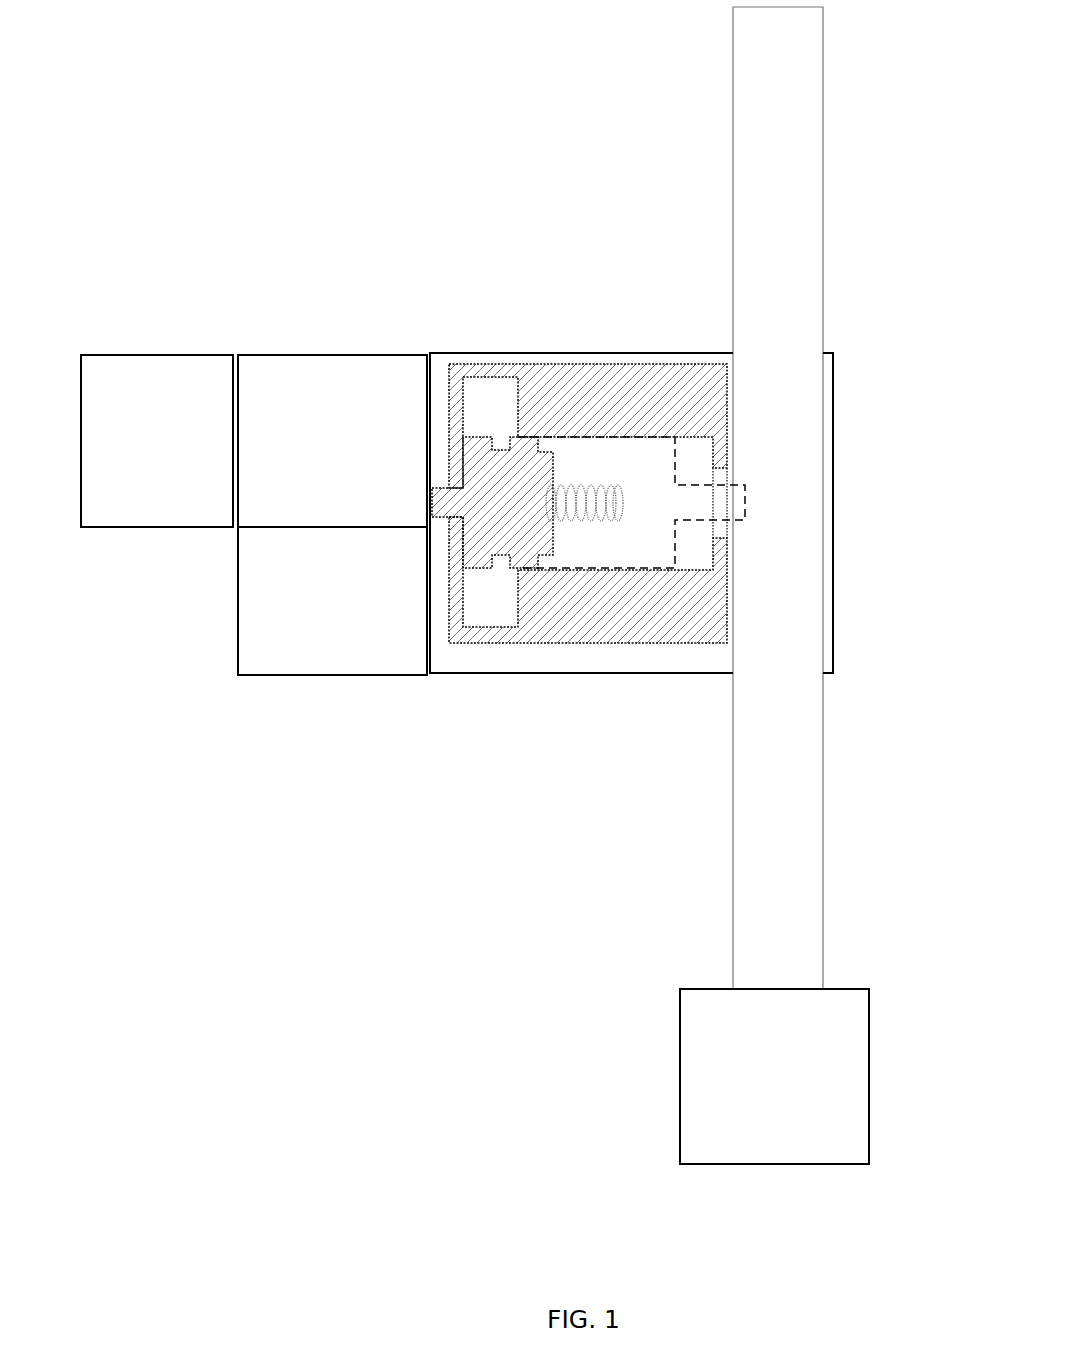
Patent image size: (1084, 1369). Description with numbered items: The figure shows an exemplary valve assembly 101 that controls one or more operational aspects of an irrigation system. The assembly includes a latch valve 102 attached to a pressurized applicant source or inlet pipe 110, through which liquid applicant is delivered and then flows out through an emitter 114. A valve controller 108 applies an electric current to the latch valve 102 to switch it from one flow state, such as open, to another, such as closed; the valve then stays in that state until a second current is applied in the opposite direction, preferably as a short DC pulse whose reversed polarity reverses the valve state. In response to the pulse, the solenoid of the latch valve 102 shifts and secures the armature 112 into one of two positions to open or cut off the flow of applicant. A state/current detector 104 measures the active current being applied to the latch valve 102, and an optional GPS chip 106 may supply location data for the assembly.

The valve assembly 101 is at (442, 129).
The latch valve 102 is at (470, 373).
The state/current detector 104 is at (270, 648).
The GPS chip 106 is at (133, 379).
The valve controller 108 is at (325, 387).
The pressurized applicant source/pipe 110 is at (807, 205).
The armature 112 is at (697, 500).
The emitter 114 is at (710, 1120).